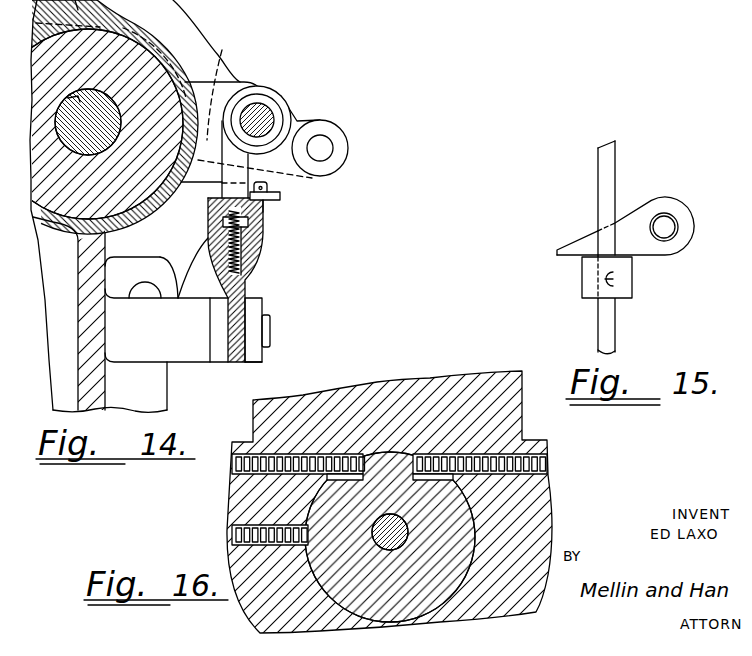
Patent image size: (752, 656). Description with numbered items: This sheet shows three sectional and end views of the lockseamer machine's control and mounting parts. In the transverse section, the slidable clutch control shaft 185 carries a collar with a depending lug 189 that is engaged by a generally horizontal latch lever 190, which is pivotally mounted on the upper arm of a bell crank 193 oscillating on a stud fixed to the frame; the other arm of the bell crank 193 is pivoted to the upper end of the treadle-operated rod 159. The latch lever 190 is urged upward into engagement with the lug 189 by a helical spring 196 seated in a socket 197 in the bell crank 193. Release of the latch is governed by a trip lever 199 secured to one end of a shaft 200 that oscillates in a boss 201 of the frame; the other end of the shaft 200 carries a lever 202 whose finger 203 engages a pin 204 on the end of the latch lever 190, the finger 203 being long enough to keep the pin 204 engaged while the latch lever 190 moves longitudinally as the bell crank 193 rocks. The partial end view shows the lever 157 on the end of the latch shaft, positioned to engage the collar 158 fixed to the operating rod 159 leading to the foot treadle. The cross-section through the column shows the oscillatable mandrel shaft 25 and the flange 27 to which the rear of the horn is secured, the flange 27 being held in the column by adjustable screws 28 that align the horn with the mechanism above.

In FIG. 14, the clutch control shaft 185 is at (262, 114).
In FIG. 14, the depending lug 189 is at (238, 173).
In FIG. 14, the latch lever 190 is at (209, 207).
In FIG. 14, the bell crank 193 is at (226, 275).
In FIG. 14, the helical spring 196 is at (242, 237).
In FIG. 14, the socket 197 is at (243, 255).
In FIG. 14, the trip lever 199 is at (224, 54).
In FIG. 14, the shaft 200 is at (330, 148).
In FIG. 14, the boss 201 is at (250, 181).
In FIG. 14, the lever 202 is at (300, 180).
In FIG. 14, the finger 203 is at (268, 210).
In FIG. 14, the pin 204 is at (282, 199).
In FIG. 15, the lever 157 is at (581, 243).
In FIG. 15, the collar 158 is at (622, 283).
In FIG. 15, the operating rod 159 is at (606, 156).
In FIG. 16, the oscillatable shaft 25 is at (397, 530).
In FIG. 16, the flange 27 is at (450, 563).
In FIG. 16, the adjustable screws 28 is at (547, 462).